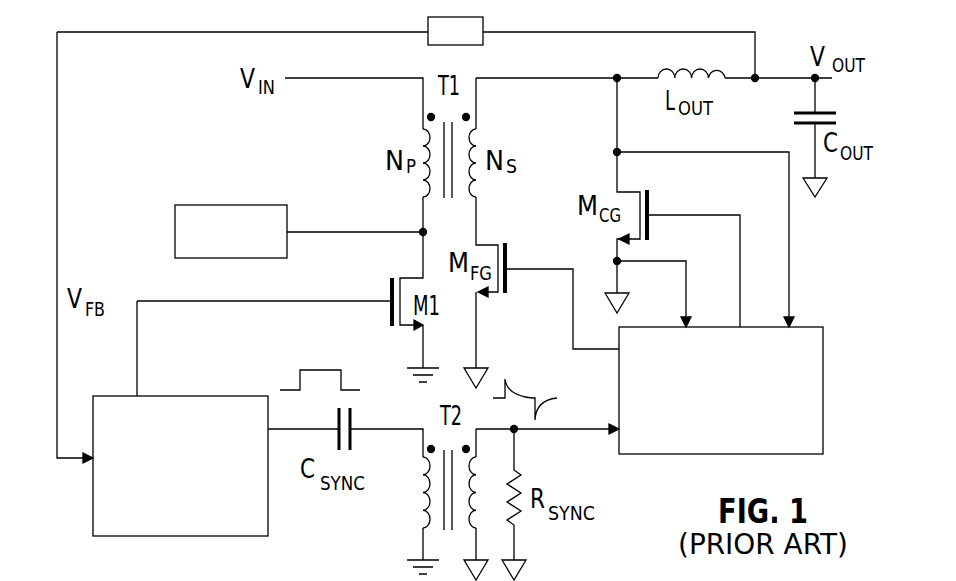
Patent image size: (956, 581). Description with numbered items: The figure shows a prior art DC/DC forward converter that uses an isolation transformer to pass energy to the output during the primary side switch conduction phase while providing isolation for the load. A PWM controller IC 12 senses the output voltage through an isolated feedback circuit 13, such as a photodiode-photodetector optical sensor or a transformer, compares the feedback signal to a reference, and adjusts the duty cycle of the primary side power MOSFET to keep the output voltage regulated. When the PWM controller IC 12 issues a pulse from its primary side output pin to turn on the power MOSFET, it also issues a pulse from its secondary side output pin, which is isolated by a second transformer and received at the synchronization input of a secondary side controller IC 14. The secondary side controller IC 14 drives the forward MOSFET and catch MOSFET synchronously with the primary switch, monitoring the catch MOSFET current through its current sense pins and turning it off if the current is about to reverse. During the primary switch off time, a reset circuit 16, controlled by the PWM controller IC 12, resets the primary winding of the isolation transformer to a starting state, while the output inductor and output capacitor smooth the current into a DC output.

The PWM controller IC 12 is at (268, 526).
The isolated feedback circuit 13 is at (428, 39).
The secondary side controller IC 14 is at (653, 454).
The reset circuit 16 is at (254, 205).